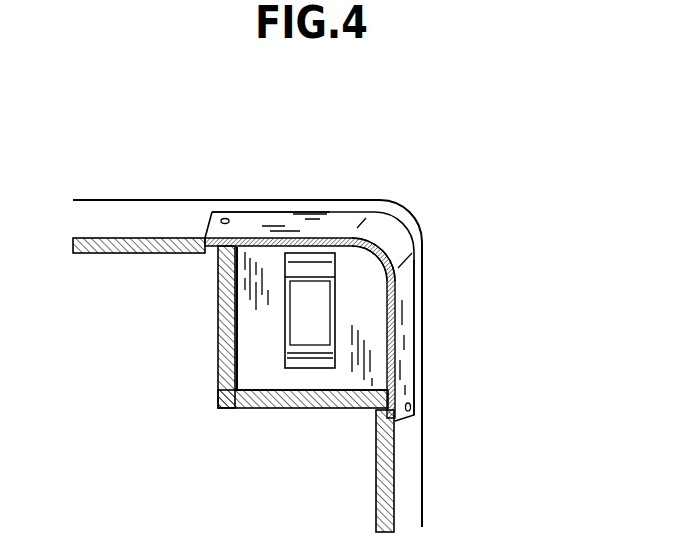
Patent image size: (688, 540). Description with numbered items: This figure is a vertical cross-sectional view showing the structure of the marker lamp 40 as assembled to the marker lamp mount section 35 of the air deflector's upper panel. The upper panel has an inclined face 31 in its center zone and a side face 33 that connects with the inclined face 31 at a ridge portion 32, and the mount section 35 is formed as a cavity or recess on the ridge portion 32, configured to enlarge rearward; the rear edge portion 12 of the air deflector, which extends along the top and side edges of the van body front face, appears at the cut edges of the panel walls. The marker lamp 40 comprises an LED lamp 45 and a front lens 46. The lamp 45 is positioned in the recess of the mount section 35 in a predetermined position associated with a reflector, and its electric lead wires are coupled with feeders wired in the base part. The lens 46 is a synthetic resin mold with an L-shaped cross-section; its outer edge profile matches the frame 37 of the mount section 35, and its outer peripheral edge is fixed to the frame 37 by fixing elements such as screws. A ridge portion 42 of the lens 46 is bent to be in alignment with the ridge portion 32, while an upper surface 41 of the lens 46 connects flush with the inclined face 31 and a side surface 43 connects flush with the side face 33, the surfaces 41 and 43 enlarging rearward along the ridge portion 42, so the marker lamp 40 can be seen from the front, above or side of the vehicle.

The rear edge portion 12 is at (300, 306).
The inclined face 31 is at (158, 207).
The ridge portion 32 is at (413, 233).
The side face 33 is at (408, 457).
The marker lamp mount section 35 is at (273, 353).
The frame 37 is at (285, 349).
The marker lamp 40 is at (445, 272).
The upper surface 41 is at (293, 220).
The ridge portion 42 is at (390, 235).
The side surface 43 is at (413, 318).
The LED lamp 45 is at (307, 328).
The front lens 46 is at (392, 308).